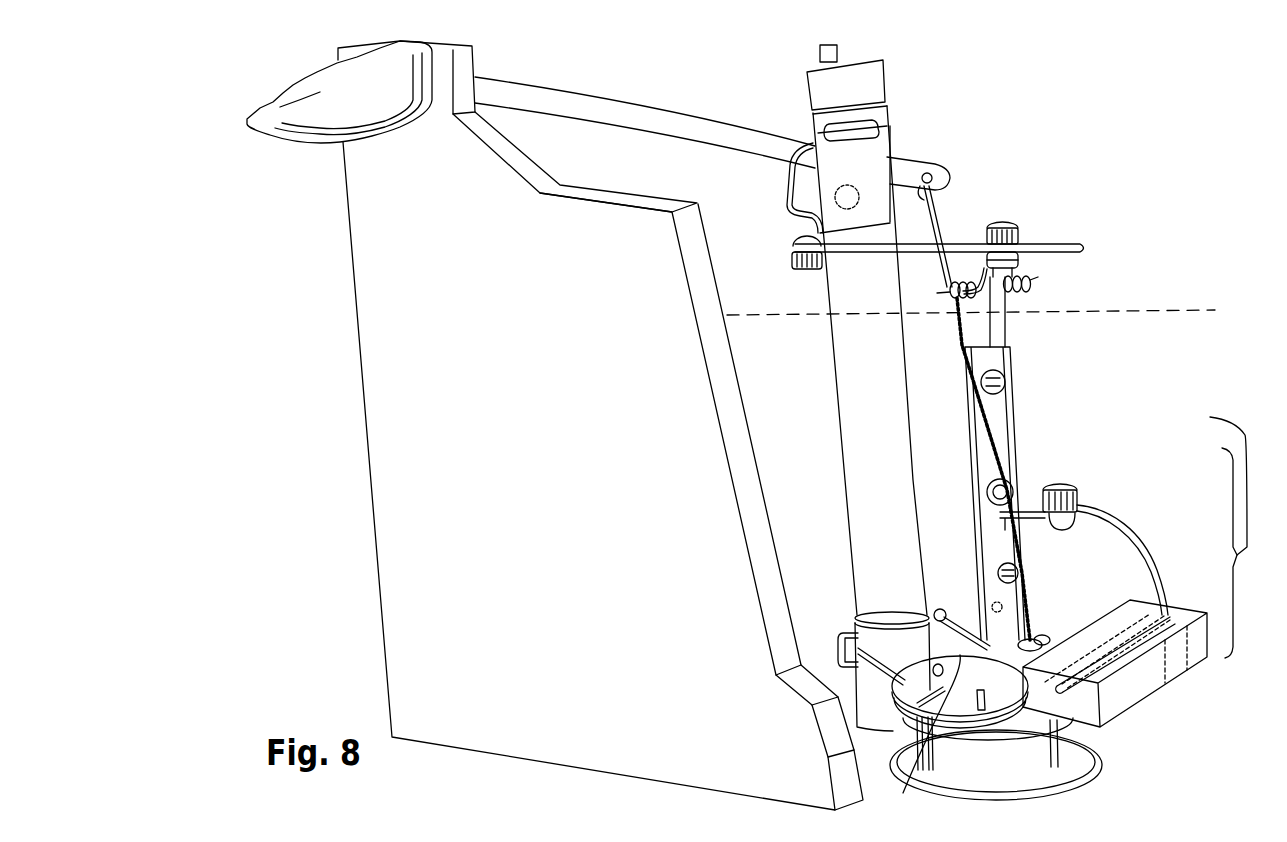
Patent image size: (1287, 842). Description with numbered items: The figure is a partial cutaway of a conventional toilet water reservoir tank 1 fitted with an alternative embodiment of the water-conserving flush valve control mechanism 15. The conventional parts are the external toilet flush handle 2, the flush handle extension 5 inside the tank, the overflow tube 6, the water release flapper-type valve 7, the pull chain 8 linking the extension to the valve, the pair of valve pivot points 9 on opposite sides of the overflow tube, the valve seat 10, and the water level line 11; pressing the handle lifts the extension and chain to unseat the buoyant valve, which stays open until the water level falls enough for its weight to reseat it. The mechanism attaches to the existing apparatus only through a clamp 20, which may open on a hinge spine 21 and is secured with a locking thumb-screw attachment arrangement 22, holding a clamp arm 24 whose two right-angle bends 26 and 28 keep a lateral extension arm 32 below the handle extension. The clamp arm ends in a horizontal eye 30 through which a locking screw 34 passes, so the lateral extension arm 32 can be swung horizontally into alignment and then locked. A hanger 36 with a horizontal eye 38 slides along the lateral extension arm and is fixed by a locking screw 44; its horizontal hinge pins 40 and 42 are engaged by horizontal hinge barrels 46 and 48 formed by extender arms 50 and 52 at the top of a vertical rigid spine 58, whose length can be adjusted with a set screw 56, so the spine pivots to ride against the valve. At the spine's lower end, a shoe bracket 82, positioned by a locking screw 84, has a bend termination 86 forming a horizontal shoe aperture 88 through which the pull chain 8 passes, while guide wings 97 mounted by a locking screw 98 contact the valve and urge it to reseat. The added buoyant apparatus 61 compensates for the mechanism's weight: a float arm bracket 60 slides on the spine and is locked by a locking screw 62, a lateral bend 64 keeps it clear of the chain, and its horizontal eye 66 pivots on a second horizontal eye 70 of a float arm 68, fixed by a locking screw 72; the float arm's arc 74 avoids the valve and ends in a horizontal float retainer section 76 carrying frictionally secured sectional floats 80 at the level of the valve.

The toilet water reservoir tank 1 is at (730, 371).
The external toilet flush handle 2 is at (322, 140).
The flush handle extension 5 is at (662, 104).
The overflow tube 6 is at (830, 292).
The water release flapper-type valve 7 is at (920, 700).
The pull chain 8 is at (968, 430).
The valve pivot points 9 is at (846, 633).
The valve seat 10 is at (1097, 767).
The water level line 11 is at (1138, 312).
The flush valve control mechanism 15 is at (1243, 195).
The clamp 20 is at (893, 147).
The hinge spine 21 is at (867, 120).
The locking thumb-screw attachment arrangement 22 is at (850, 212).
The clamp arm 24 is at (790, 180).
The right-angle bend 26 is at (787, 215).
The right-angle bend 28 is at (803, 227).
The horizontal eye 30 is at (792, 243).
The lateral extension arm 32 is at (950, 247).
The locking screw 34 is at (790, 262).
The hanger 36 is at (981, 278).
The horizontal eye 38 is at (1020, 265).
The horizontal hinge pin 40 is at (946, 312).
The horizontal hinge pin 42 is at (1036, 285).
The locking screw 44 is at (1012, 226).
The horizontal hinge barrel 46 is at (955, 302).
The horizontal hinge barrel 48 is at (1015, 298).
The extender arm 50 is at (962, 345).
The extender arm 52 is at (1005, 330).
The set screw 56 is at (1006, 380).
The vertical rigid spine 58 is at (1012, 417).
The float arm bracket 60 is at (1015, 492).
The buoyant apparatus 61 is at (1192, 428).
The locking screw 62 is at (1012, 480).
The lateral bend 64 is at (1080, 488).
The horizontal eye 66 is at (1055, 525).
The float arm 68 is at (1110, 512).
The second horizontal eye 70 is at (1080, 525).
The locking screw 72 is at (1080, 498).
The arc 74 is at (1152, 562).
The horizontal float retainer section 76 is at (1127, 720).
The sectional floats 80 is at (1155, 688).
The shoe bracket 82 is at (1018, 598).
The locking screw 84 is at (990, 567).
The bend termination 86 is at (1065, 633).
The horizontal shoe aperture 88 is at (1045, 633).
The guide wings 97 is at (1050, 627).
The locking screw 98 is at (991, 607).